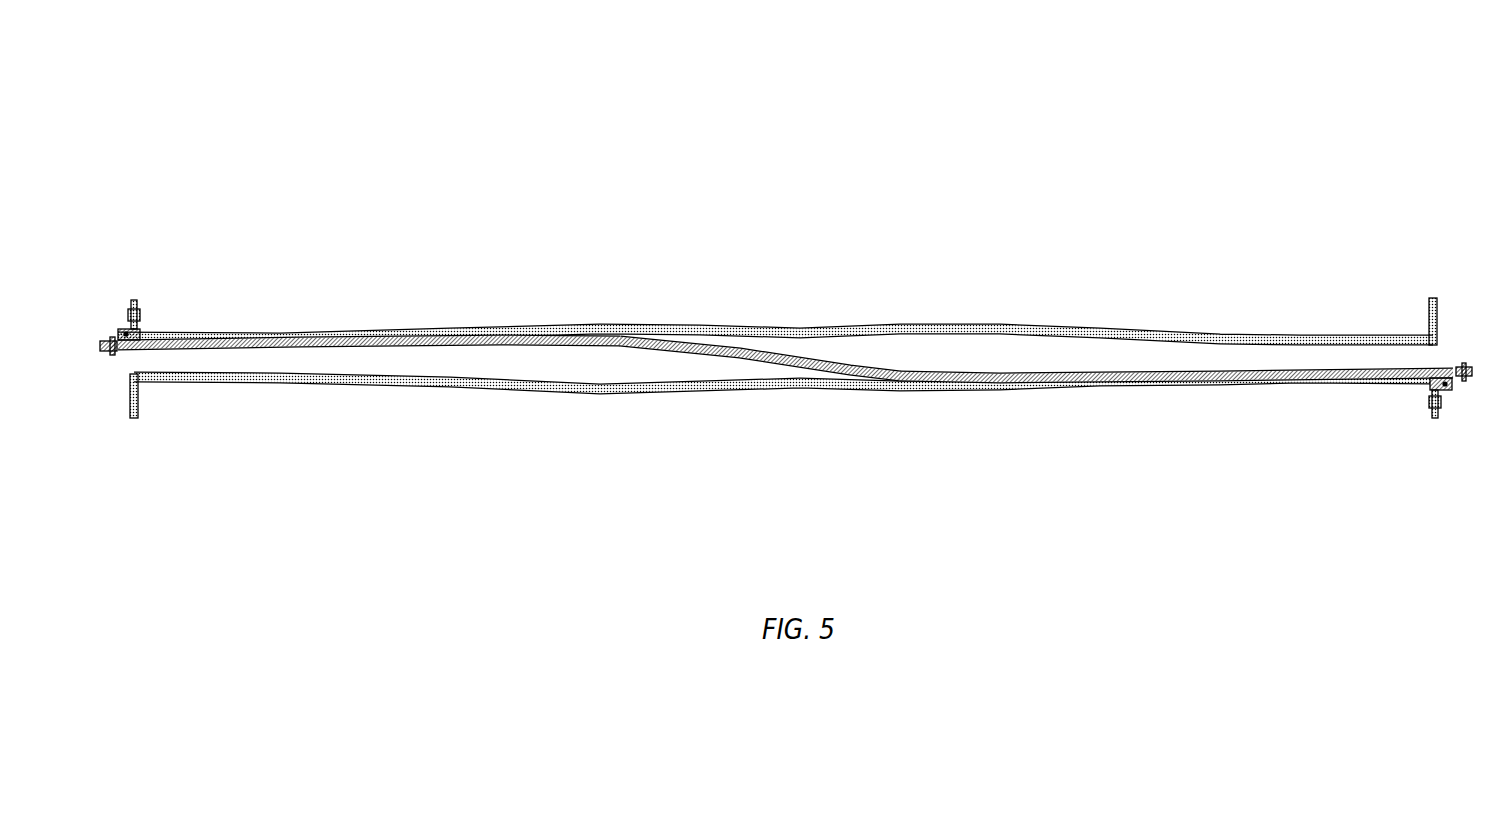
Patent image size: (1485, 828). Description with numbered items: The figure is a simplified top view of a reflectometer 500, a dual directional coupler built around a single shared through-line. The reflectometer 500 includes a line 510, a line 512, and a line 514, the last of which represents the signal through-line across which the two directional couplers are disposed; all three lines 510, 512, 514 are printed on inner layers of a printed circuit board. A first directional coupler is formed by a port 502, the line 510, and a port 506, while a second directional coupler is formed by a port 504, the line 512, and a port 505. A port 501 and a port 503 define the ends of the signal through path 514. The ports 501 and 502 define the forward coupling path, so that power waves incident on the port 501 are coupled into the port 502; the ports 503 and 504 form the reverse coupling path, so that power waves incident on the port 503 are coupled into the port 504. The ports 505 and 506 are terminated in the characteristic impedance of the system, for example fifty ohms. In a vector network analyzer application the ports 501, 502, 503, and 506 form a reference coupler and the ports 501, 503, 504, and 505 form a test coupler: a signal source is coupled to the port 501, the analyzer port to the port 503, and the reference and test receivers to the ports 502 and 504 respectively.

The reflectometer 500 is at (1332, 136).
The port 501 is at (110, 340).
The port 502 is at (135, 300).
The port 503 is at (1461, 380).
The port 504 is at (1432, 418).
The port 505 is at (138, 418).
The port 506 is at (1432, 300).
The line 510 is at (933, 327).
The line 512 is at (510, 383).
The line 514 is at (734, 350).